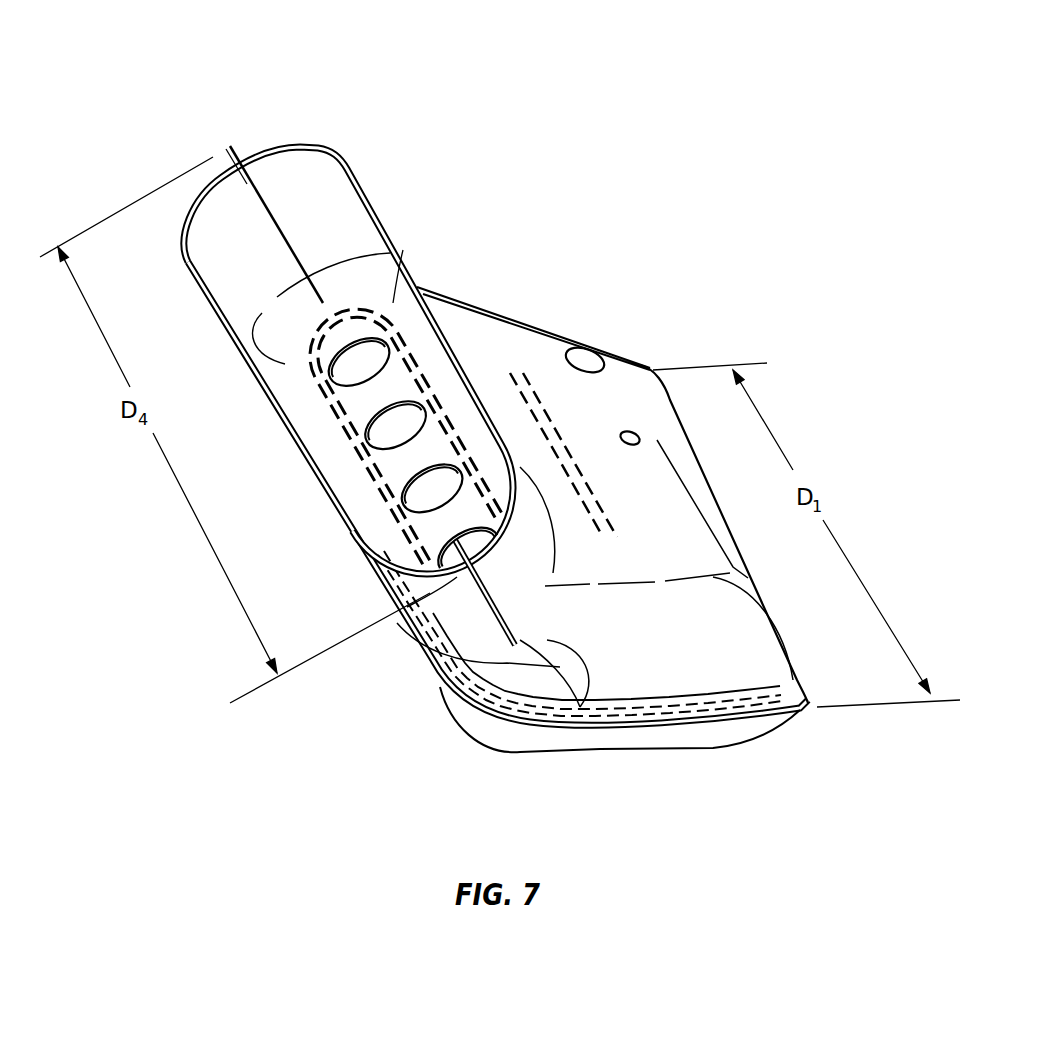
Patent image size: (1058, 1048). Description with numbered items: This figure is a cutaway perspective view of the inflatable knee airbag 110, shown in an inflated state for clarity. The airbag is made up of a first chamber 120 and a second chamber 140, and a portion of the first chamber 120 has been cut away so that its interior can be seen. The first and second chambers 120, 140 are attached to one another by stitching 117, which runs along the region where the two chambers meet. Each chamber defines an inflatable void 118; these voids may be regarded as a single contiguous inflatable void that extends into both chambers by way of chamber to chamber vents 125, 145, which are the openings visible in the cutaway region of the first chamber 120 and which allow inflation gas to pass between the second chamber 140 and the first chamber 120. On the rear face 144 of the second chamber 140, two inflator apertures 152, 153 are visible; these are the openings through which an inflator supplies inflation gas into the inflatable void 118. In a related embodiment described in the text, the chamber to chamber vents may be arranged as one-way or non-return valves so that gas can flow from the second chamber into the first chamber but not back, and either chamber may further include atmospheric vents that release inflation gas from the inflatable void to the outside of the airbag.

The inflatable knee airbag 110 is at (518, 398).
The stitching 117 is at (423, 387).
The inflatable void 118 is at (368, 275).
The first chamber 120 is at (384, 381).
The chamber to chamber vent 125 is at (338, 448).
The chamber to chamber vent 145 is at (460, 548).
The second chamber 140 is at (522, 498).
The rear face 144 is at (671, 531).
The inflator aperture 152 is at (586, 362).
The inflator aperture 153 is at (629, 433).